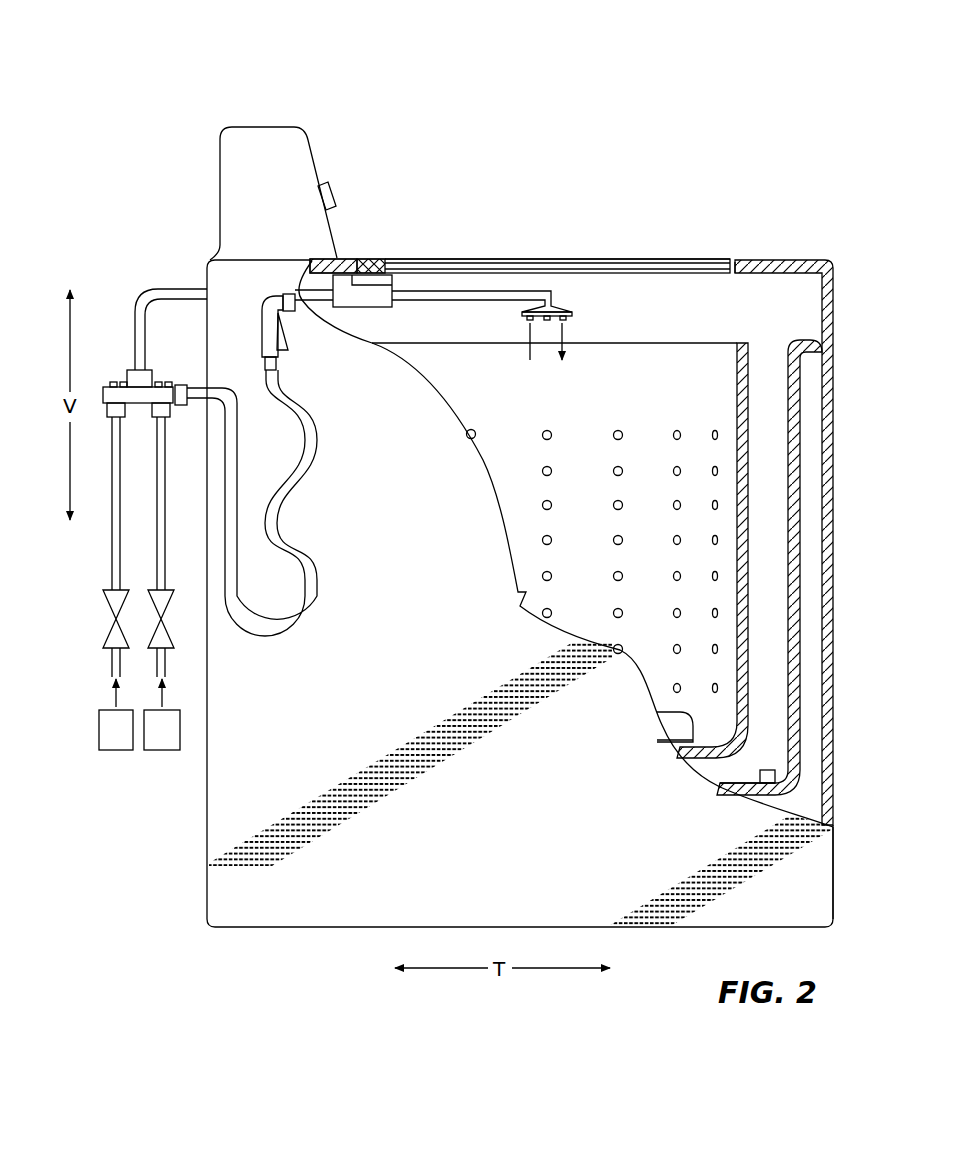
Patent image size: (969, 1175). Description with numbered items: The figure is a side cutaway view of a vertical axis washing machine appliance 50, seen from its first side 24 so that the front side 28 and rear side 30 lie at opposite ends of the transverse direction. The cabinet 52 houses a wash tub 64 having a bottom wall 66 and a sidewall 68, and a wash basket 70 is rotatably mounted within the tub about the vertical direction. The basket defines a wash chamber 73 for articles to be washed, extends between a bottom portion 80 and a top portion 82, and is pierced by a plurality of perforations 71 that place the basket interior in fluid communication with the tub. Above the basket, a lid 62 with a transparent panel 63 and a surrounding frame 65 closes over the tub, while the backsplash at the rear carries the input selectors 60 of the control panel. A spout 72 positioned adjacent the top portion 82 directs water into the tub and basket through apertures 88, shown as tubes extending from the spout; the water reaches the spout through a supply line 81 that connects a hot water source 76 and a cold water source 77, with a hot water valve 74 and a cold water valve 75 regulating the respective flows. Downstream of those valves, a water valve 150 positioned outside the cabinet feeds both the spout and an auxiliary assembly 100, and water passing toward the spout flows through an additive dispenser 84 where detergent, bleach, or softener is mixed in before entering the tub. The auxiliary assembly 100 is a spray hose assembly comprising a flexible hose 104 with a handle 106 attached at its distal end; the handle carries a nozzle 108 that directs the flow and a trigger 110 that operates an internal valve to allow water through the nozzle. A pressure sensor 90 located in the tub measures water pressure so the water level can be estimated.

The washing machine appliance 50 is at (265, 55).
The first side 24 is at (255, 776).
The front side 28 is at (846, 297).
The rear side 30 is at (160, 187).
The cabinet 52 is at (838, 808).
The input selectors 60 is at (333, 195).
The lid 62 is at (712, 256).
The transparent panel 63 is at (703, 257).
The wash tub 64 is at (801, 600).
The frame 65 is at (740, 259).
The bottom wall 66 is at (748, 778).
The sidewall 68 is at (808, 535).
The wash basket 70 is at (800, 567).
The perforations 71 is at (687, 432).
The spout 72 is at (518, 288).
The wash chamber 73 is at (626, 522).
The hot water valve 74 is at (110, 608).
The cold water valve 75 is at (167, 608).
The hot water source 76 is at (116, 714).
The cold water source 77 is at (162, 714).
The bottom portion 80 is at (755, 716).
The supply line 81 is at (147, 312).
The top portion 82 is at (755, 345).
The additive dispenser 84 is at (400, 282).
The apertures 88 is at (520, 325).
The pressure sensor 90 is at (772, 768).
The auxiliary assembly 100 is at (237, 481).
The hose 104 is at (266, 508).
The handle 106 is at (253, 313).
The nozzle 108 is at (318, 275).
The trigger 110 is at (292, 333).
The water valve 150 is at (153, 390).